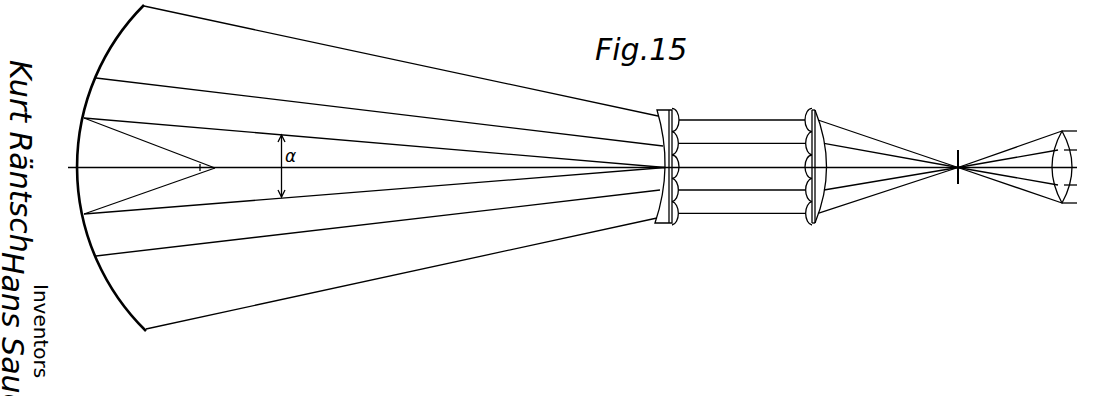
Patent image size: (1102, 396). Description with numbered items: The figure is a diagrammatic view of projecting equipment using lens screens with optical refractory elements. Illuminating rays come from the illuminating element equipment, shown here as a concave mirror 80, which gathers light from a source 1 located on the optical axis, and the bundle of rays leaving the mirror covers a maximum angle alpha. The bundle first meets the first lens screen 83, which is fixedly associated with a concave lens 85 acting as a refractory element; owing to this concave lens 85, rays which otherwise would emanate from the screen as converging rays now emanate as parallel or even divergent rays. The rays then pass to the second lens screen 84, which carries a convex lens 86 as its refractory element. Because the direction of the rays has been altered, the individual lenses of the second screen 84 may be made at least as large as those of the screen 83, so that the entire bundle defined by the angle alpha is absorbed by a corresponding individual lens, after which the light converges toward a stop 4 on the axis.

The concave mirror 80 is at (118, 33).
The light source 1 is at (215, 168).
The concave lens 85 is at (664, 115).
The first lens screen 83 is at (682, 113).
The second lens screen 84 is at (808, 112).
The convex lens 86 is at (818, 133).
The stop 4 is at (957, 172).